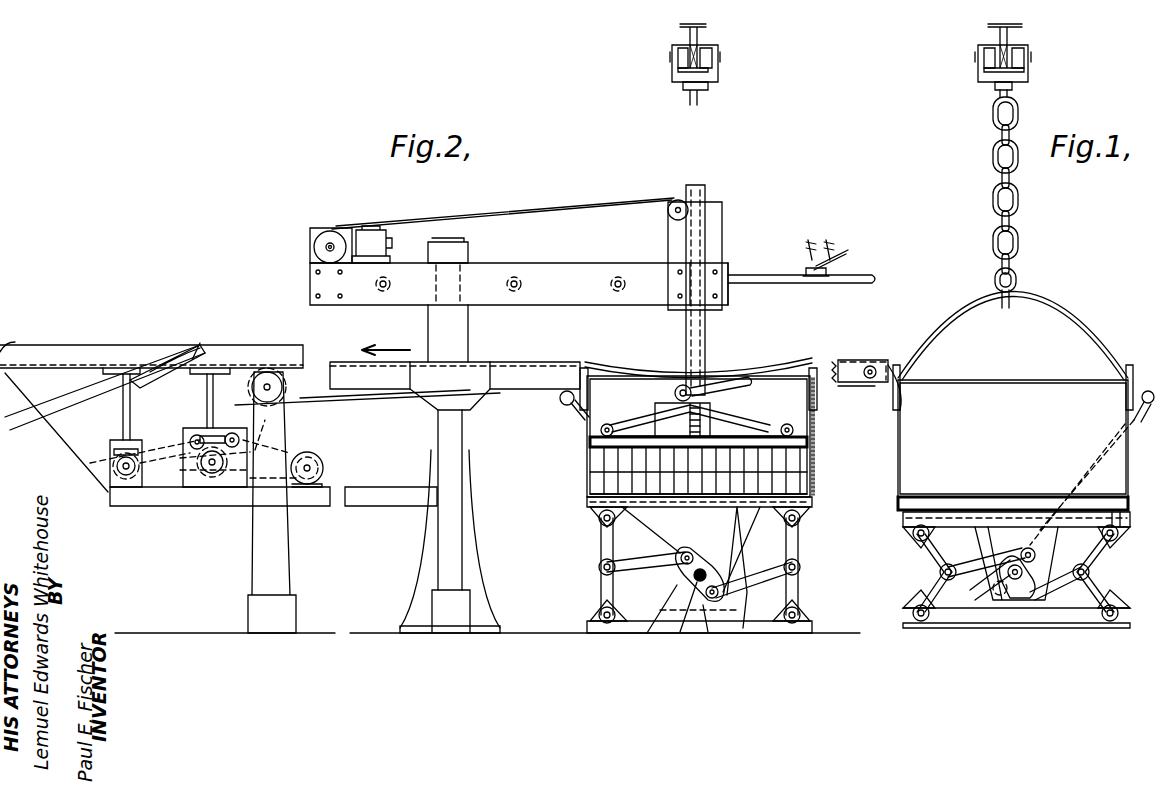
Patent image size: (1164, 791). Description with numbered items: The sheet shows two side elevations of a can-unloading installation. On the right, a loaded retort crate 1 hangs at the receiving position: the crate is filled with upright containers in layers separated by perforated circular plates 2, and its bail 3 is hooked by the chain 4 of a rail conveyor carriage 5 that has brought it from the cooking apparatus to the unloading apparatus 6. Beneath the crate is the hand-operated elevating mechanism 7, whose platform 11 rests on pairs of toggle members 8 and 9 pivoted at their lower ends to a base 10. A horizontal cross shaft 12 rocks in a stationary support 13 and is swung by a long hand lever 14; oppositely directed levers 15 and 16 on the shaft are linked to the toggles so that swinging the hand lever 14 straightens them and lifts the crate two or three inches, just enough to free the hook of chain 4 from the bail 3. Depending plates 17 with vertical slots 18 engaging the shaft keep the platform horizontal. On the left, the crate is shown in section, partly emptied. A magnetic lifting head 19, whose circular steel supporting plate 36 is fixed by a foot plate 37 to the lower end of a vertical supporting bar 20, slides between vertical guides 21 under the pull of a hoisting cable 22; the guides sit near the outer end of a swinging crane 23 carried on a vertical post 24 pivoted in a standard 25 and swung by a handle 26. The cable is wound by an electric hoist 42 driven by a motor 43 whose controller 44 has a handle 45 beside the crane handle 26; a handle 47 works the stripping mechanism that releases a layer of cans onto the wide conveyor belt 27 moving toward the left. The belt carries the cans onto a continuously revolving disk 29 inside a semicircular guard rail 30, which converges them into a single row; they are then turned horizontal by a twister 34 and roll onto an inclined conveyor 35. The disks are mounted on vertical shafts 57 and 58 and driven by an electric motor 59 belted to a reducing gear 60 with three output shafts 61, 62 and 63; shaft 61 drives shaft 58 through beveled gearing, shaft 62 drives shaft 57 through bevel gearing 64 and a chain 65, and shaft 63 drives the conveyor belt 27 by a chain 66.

In FIG. 2, the retort crate 1 is at (812, 441).
In FIG. 1, the retort crate 1 is at (1130, 480).
In FIG. 2, the circular plates 2 is at (808, 470).
In FIG. 2, the bail 3 is at (762, 358).
In FIG. 1, the bail 3 is at (1075, 320).
In FIG. 2, the chain 4 is at (700, 97).
In FIG. 1, the chain 4 is at (993, 201).
In FIG. 2, the rail conveyor carriage 5 is at (712, 70).
In FIG. 1, the rail conveyor carriage 5 is at (978, 71).
In FIG. 2, the unloading apparatus 6 is at (548, 208).
In FIG. 2, the elevating mechanism 7 is at (819, 507).
In FIG. 1, the elevating mechanism 7 is at (893, 521).
In FIG. 2, the toggle members 8 is at (800, 545).
In FIG. 1, the toggle members 8 is at (1096, 575).
In FIG. 2, the toggle members 9 is at (600, 546).
In FIG. 1, the toggle members 9 is at (935, 582).
In FIG. 2, the base 10 is at (766, 639).
In FIG. 1, the base 10 is at (1076, 638).
In FIG. 2, the platform 11 is at (760, 507).
In FIG. 1, the platform 11 is at (1125, 512).
In FIG. 2, the cross shaft 12 is at (688, 610).
In FIG. 1, the cross shaft 12 is at (992, 582).
In FIG. 2, the stationary support 13 is at (655, 620).
In FIG. 1, the stationary support 13 is at (985, 610).
In FIG. 2, the hand lever 14 is at (572, 410).
In FIG. 1, the hand lever 14 is at (1147, 410).
In FIG. 2, the lever 15 is at (680, 575).
In FIG. 1, the lever 15 is at (1020, 560).
In FIG. 2, the lever 16 is at (705, 605).
In FIG. 1, the lever 16 is at (1012, 600).
In FIG. 2, the depending plates 17 is at (672, 532).
In FIG. 1, the depending plates 17 is at (1048, 545).
In FIG. 2, the vertical slot 18 is at (712, 562).
In FIG. 1, the vertical slot 18 is at (1018, 600).
In FIG. 2, the lifting head 19 is at (822, 428).
In FIG. 2, the vertical supporting bar 20 is at (705, 348).
In FIG. 2, the vertical guides 21 is at (668, 246).
In FIG. 2, the hoisting cable 22 is at (648, 204).
In FIG. 2, the swinging crane 23 is at (575, 268).
In FIG. 2, the vertical post 24 is at (470, 305).
In FIG. 2, the standard 25 is at (470, 478).
In FIG. 2, the handle 26 is at (862, 278).
In FIG. 2, the conveyor belt 27 is at (535, 362).
In FIG. 2, the disk 29 is at (80, 345).
In FIG. 2, the guard rail 30 is at (22, 333).
In FIG. 2, the twister 34 is at (165, 362).
In FIG. 2, the inclined conveyor 35 is at (35, 425).
In FIG. 2, the circular steel supporting plate 36 is at (635, 425).
In FIG. 2, the circular foot plate 37 is at (665, 430).
In FIG. 2, the electric hoist 42 is at (317, 220).
In FIG. 2, the motor 43 is at (368, 226).
In FIG. 2, the controller 44 is at (806, 258).
In FIG. 2, the handle 45 is at (840, 250).
In FIG. 2, the handle 47 is at (752, 382).
In FIG. 2, the vertical shaft 57 is at (123, 414).
In FIG. 2, the vertical shaft 58 is at (207, 404).
In FIG. 2, the electric motor 59 is at (318, 458).
In FIG. 2, the reducing gear 60 is at (190, 426).
In FIG. 2, the output shaft 61 is at (212, 490).
In FIG. 2, the output shaft 62 is at (195, 448).
In FIG. 2, the output shaft 63 is at (267, 409).
In FIG. 2, the bevel gearing 64 is at (95, 460).
In FIG. 2, the chain 65 is at (150, 490).
In FIG. 2, the chain 66 is at (235, 434).